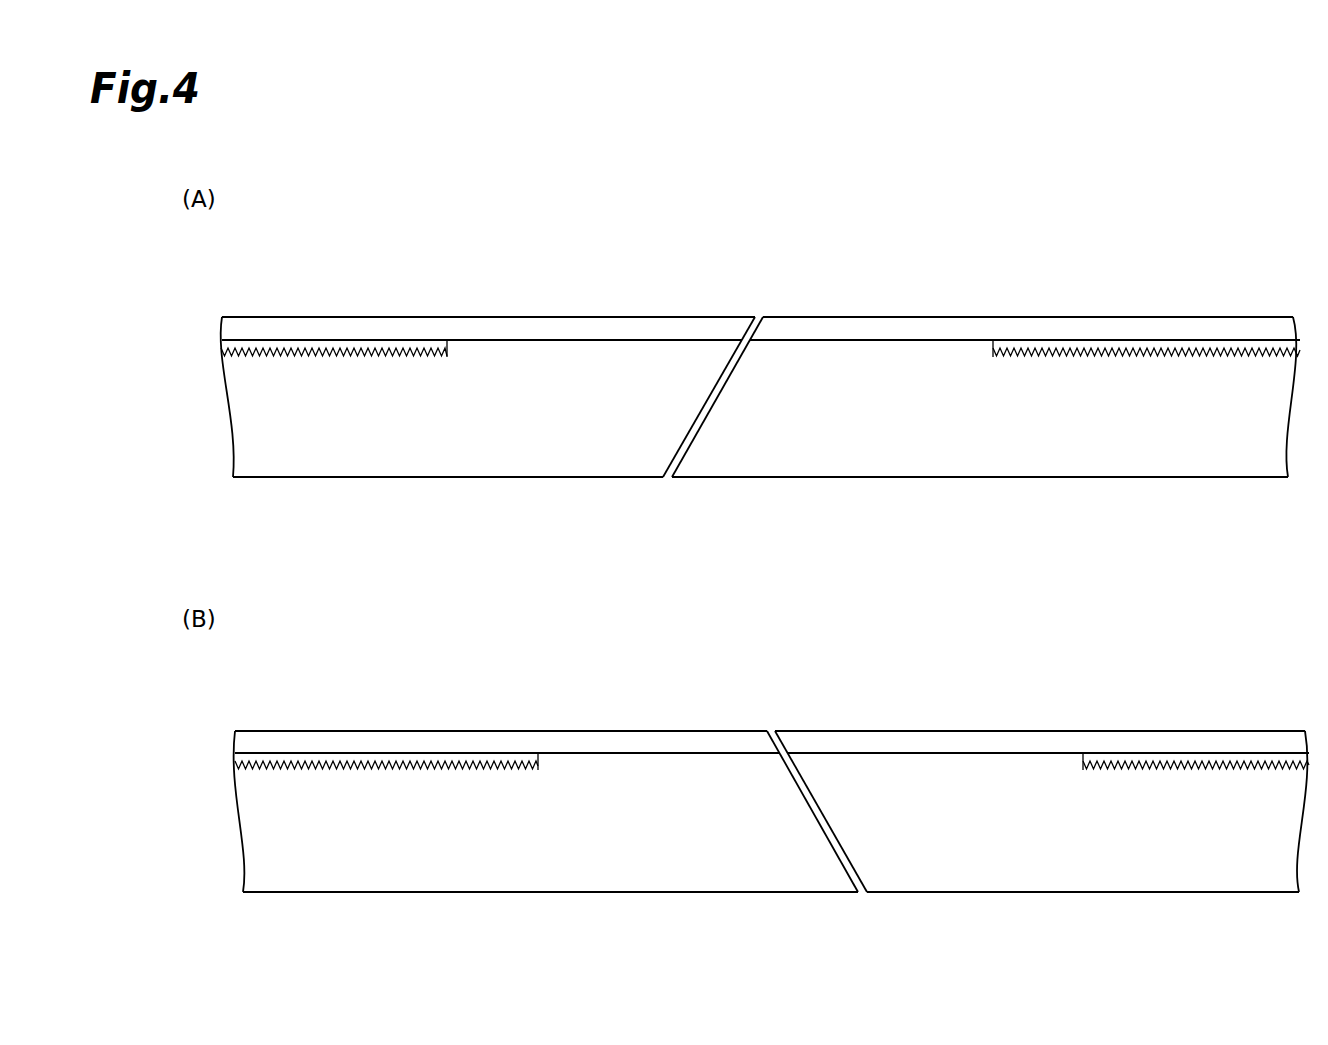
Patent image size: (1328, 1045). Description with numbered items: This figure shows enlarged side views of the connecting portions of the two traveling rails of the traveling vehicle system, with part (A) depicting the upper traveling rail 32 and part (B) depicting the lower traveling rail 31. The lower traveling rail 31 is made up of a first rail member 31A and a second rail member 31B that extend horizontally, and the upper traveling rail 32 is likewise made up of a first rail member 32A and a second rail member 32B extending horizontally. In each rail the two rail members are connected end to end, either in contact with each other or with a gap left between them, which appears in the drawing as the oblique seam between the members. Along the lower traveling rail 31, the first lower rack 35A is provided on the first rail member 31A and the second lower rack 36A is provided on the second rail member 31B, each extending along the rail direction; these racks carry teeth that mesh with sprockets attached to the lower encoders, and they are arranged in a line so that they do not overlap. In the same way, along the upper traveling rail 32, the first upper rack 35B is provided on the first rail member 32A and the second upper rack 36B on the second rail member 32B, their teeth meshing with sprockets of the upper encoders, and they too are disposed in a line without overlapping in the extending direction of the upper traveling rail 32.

The lower traveling rail 31 is at (771, 857).
The first rail member 31A is at (553, 873).
The second rail member 31B is at (973, 877).
The upper traveling rail 32 is at (760, 435).
The first rail member 32A is at (555, 457).
The second rail member 32B is at (980, 450).
The first lower rack 35A is at (340, 762).
The first upper rack 35B is at (350, 347).
The second lower rack 36A is at (1160, 770).
The second upper rack 36B is at (1160, 353).